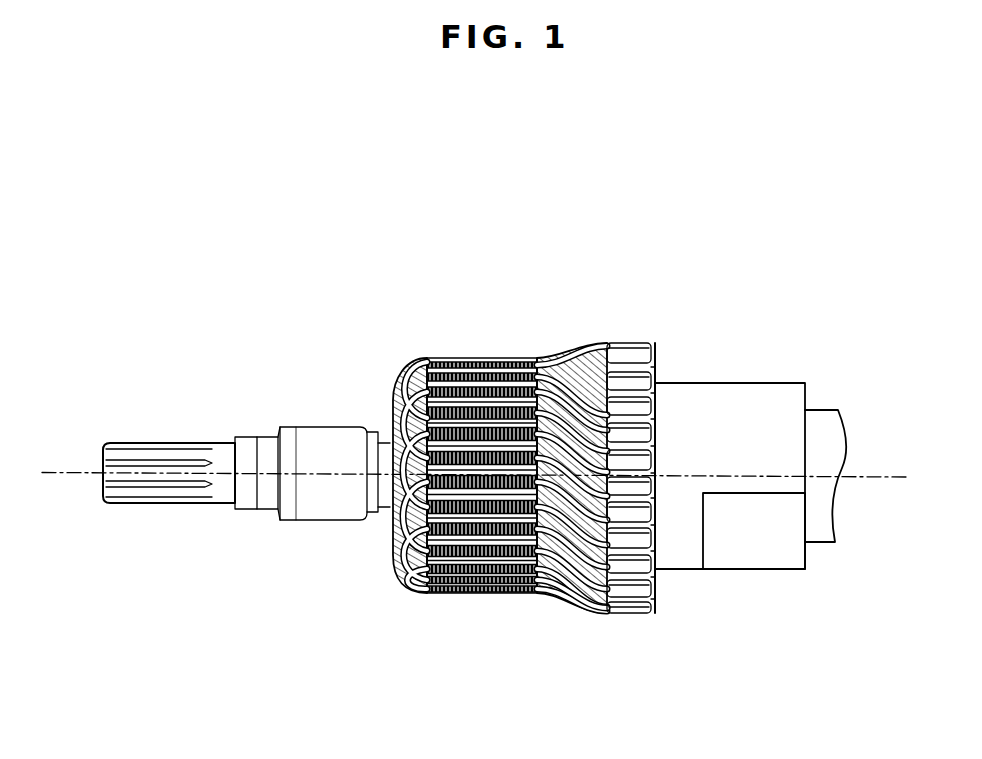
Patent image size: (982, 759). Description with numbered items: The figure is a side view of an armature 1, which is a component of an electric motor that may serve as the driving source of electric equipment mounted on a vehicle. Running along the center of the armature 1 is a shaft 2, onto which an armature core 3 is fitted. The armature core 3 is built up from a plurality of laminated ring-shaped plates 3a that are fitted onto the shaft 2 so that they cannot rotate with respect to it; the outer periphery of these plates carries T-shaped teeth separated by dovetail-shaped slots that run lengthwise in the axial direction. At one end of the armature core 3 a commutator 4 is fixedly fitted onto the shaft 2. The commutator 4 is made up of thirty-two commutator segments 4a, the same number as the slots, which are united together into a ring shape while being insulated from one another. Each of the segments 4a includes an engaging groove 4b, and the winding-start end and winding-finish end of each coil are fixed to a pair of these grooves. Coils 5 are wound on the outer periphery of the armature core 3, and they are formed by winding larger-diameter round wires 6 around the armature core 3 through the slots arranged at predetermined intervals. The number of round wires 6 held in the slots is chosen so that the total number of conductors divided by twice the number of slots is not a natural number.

The armature 1 is at (750, 268).
The shaft 2 is at (225, 455).
The armature core 3 is at (479, 398).
The ring-shaped plates 3a is at (507, 357).
The commutator 4 is at (740, 451).
The segments 4a is at (627, 347).
The engaging grooves 4b is at (662, 360).
The coils 5 is at (553, 360).
The round wires 6 is at (552, 590).